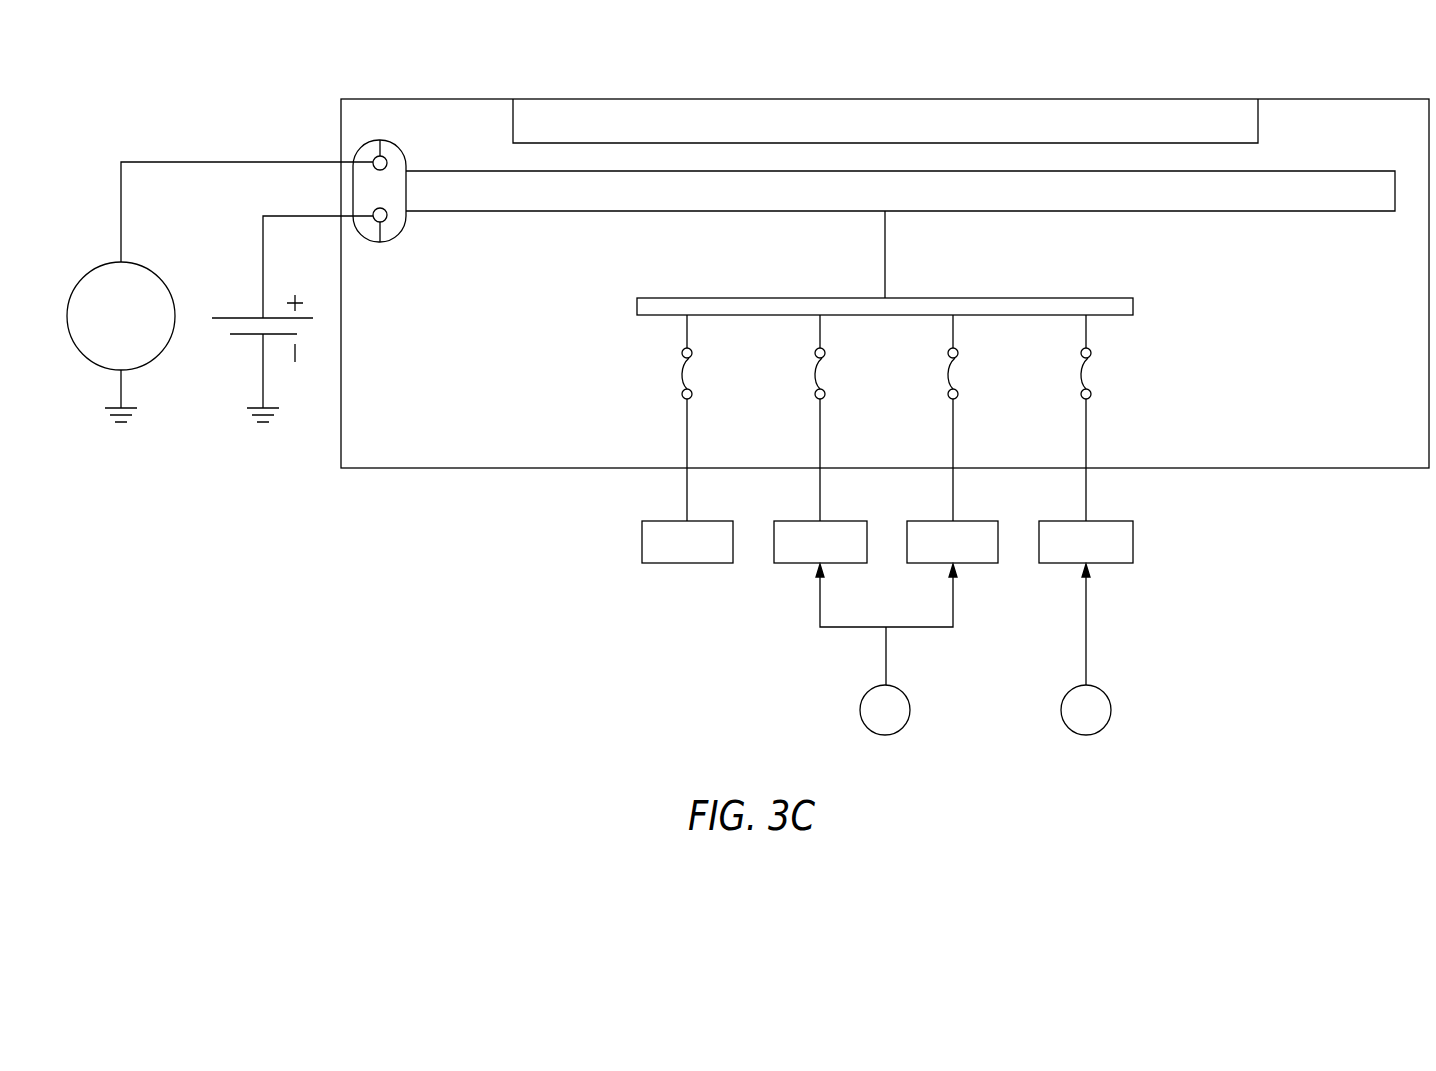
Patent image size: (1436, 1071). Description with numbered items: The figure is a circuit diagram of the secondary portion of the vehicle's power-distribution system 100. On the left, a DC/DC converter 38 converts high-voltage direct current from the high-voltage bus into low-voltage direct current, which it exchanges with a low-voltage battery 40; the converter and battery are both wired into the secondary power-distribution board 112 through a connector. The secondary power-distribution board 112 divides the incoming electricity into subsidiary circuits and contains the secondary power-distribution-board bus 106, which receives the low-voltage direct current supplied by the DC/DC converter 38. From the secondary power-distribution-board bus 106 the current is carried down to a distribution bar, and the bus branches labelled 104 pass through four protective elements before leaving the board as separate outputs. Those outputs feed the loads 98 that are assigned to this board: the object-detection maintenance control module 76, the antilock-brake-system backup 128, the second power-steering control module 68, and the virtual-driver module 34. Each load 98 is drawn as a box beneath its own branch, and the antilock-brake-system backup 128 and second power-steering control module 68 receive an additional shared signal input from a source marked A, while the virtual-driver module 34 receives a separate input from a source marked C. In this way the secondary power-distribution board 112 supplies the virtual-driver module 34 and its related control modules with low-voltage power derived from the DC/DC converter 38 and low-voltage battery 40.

The power-distribution system 100 is at (931, 62).
The secondary power-distribution board 112 is at (1372, 99).
The secondary power-distribution-board bus 106 is at (1337, 171).
The primary power-distribution-board bus 104 is at (692, 362).
The DC/DC converter 38 is at (95, 263).
The low-voltage battery 40 is at (238, 336).
The loads 98 is at (566, 527).
The object-detection maintenance control module 76 is at (662, 565).
The antilock-brake-system backup 128 is at (793, 565).
The second power-steering control module 68 is at (980, 565).
The virtual-driver module 34 is at (1113, 565).